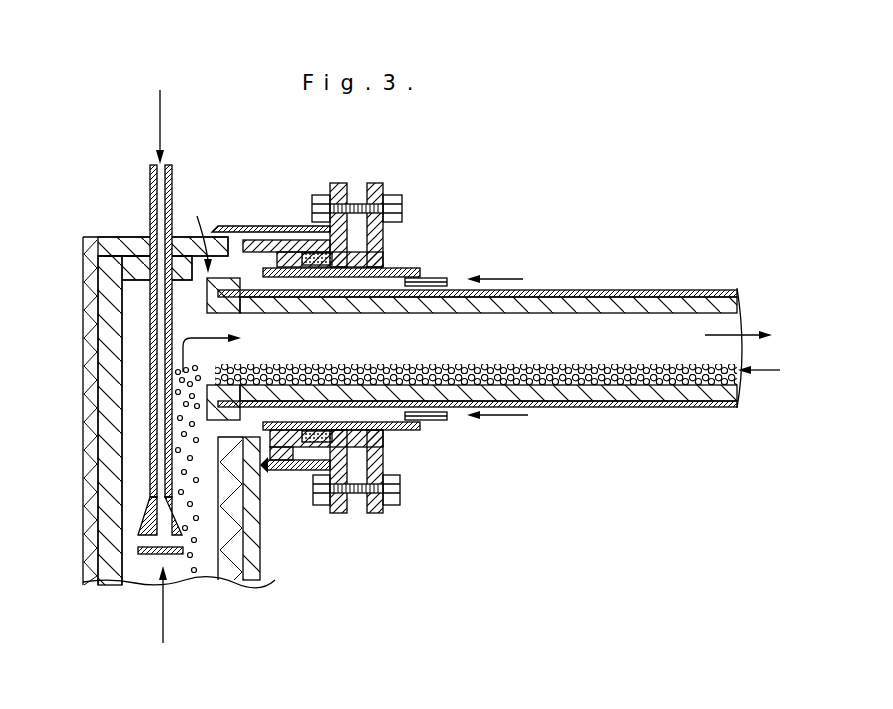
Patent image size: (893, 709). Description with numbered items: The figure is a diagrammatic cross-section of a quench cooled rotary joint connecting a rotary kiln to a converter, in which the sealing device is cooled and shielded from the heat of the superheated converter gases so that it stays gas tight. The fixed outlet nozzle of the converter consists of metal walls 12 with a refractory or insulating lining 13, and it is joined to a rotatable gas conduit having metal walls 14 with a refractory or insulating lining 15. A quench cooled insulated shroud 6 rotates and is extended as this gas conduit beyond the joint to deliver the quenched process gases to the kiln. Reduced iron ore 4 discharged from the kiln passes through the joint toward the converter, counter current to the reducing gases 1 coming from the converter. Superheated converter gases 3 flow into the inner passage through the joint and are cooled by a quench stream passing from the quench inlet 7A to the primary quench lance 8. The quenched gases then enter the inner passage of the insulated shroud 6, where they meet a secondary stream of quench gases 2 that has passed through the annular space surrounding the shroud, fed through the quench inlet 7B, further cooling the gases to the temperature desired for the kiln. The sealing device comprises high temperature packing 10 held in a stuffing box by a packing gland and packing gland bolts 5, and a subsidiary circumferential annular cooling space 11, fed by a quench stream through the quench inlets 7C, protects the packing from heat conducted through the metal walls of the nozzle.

The reducing gases 1 is at (750, 333).
The secondary stream of quench gases 2 is at (213, 449).
The superheated converter gases 3 is at (165, 617).
The reduced iron ore 4 is at (766, 372).
The packing gland bolts 5 is at (353, 240).
The quench cooled insulated shroud 6 is at (393, 268).
The quench inlet 7A is at (160, 108).
The quench inlet 7B is at (510, 278).
The quench inlets 7C is at (322, 197).
The primary quench lance 8 is at (152, 343).
The high temperature packing 10 is at (305, 254).
The subsidiary circumferential annular cooling space 11 is at (242, 233).
The metal walls 12 is at (97, 488).
The refractory or insulating lining 13 is at (100, 527).
The gas conduit metal walls 14 is at (603, 297).
The refractory or insulating lining 15 is at (663, 300).